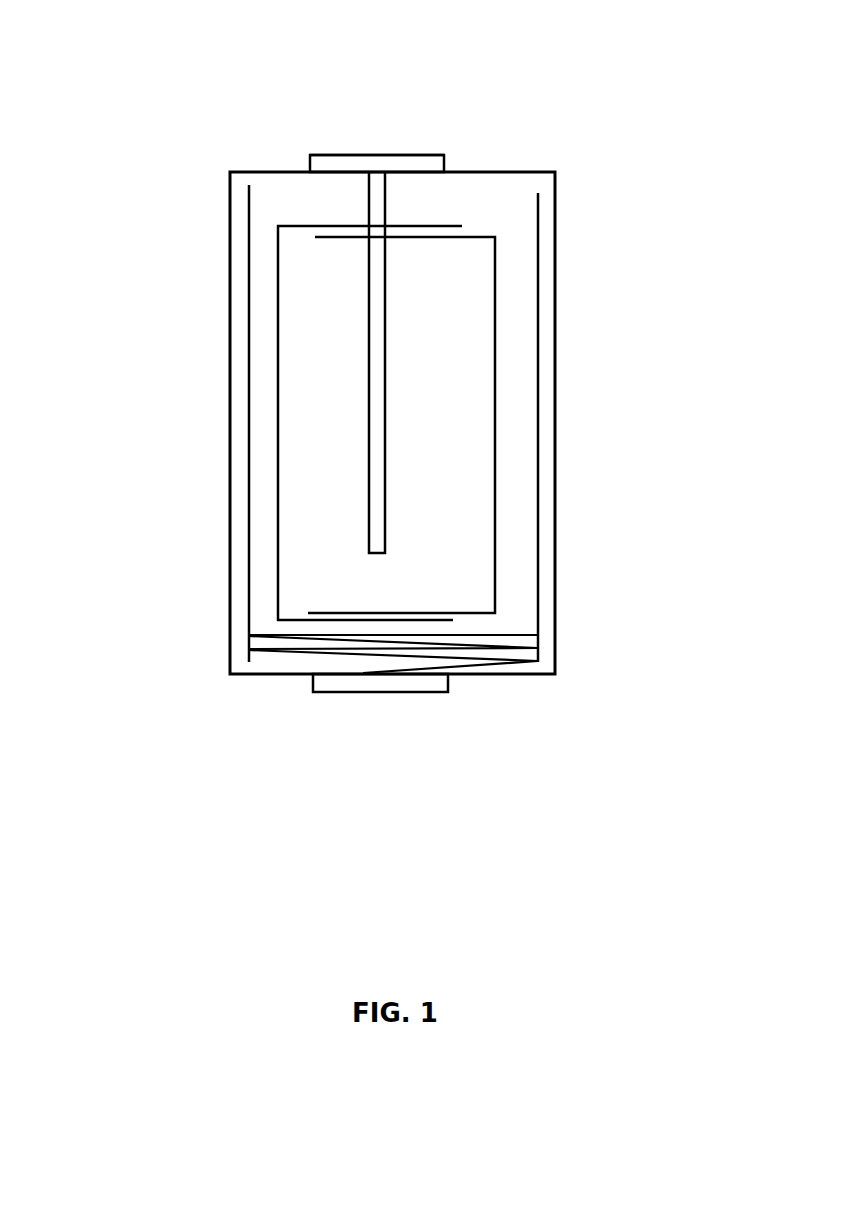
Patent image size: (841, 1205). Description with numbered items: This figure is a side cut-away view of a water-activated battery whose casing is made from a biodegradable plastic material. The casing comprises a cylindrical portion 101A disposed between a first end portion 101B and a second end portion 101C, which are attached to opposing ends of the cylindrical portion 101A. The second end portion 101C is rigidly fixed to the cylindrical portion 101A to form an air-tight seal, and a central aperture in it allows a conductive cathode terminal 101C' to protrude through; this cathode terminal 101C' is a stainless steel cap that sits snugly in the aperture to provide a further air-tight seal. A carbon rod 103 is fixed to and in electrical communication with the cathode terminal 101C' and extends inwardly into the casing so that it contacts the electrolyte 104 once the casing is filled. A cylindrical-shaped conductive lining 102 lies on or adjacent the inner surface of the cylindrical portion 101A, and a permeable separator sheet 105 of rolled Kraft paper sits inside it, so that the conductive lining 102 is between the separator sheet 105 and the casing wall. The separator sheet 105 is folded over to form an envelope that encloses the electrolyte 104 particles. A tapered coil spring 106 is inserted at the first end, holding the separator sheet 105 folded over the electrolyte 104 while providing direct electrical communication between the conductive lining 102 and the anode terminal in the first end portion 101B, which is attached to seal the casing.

The cylindrical portion 101A is at (219, 350).
The first end portion 101B is at (527, 682).
The second end portion 101C is at (247, 110).
The cathode terminal 101C' is at (344, 86).
The conductive lining 102 is at (250, 202).
The carbon rod 103 is at (385, 443).
The electrolyte 104 is at (317, 462).
The permeable separator sheet 105 is at (498, 578).
The coil spring 106 is at (247, 643).